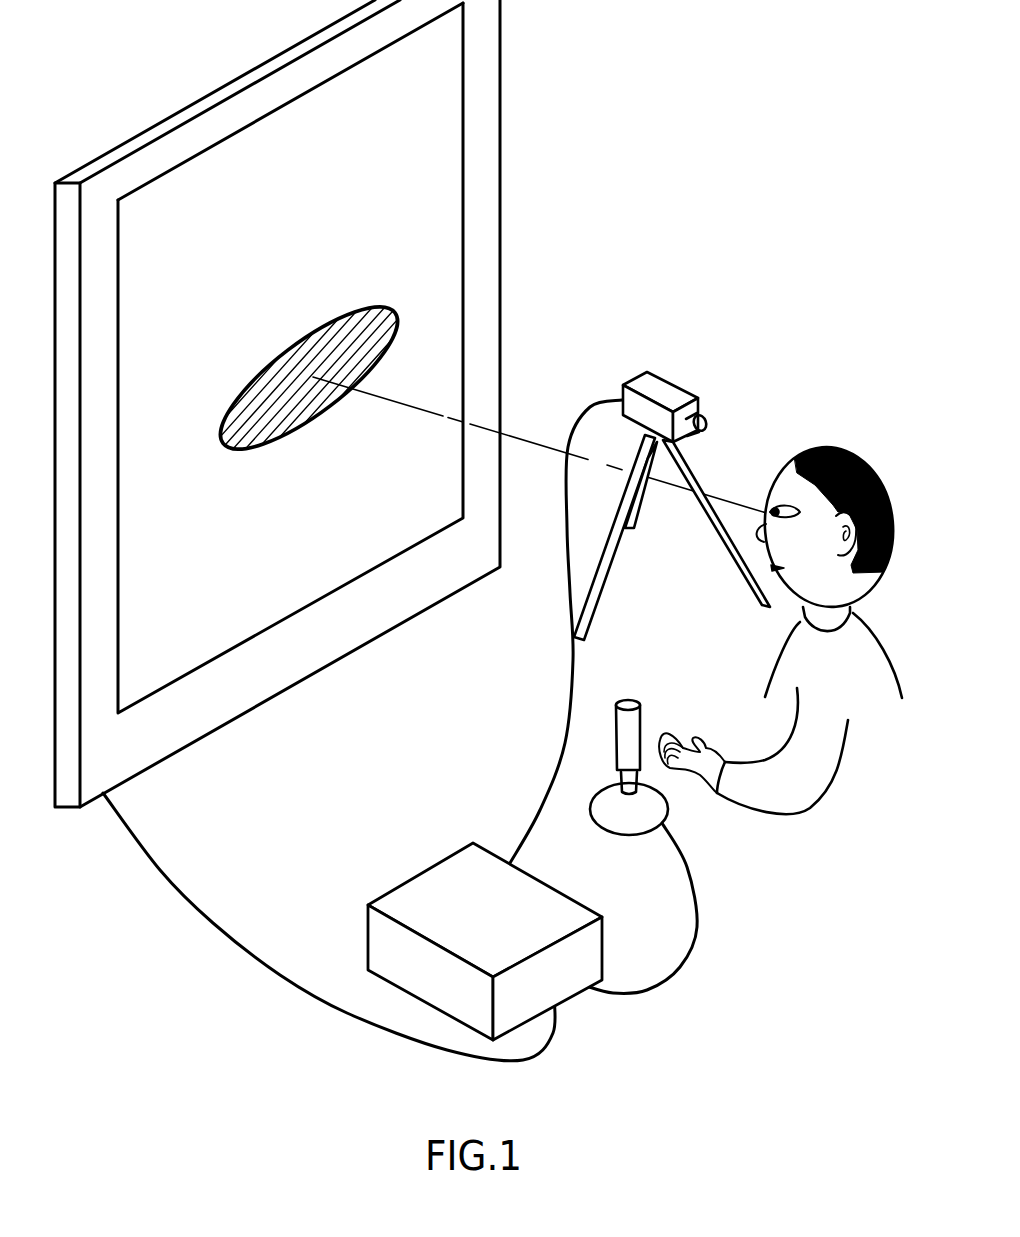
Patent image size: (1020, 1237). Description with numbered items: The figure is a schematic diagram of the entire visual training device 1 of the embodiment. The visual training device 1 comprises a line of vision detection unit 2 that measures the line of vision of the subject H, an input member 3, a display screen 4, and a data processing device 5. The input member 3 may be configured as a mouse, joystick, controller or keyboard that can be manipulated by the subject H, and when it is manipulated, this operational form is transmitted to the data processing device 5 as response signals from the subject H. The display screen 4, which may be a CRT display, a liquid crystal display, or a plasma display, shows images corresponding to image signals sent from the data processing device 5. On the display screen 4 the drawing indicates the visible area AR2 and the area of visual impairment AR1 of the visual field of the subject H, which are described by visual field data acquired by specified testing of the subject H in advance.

The visual training device 1 is at (628, 162).
The line of vision detection unit 2 is at (632, 375).
The input member 3 is at (627, 693).
The display screen 4 is at (247, 713).
The data processing device 5 is at (435, 866).
The subject H is at (857, 453).
The area of visual impairment AR1 is at (270, 443).
The visible area AR2 is at (303, 252).